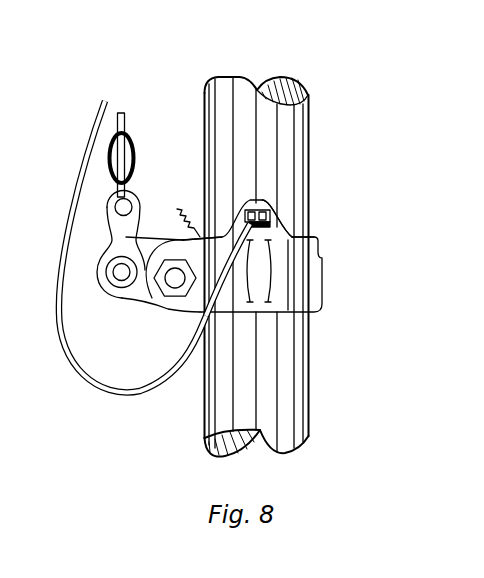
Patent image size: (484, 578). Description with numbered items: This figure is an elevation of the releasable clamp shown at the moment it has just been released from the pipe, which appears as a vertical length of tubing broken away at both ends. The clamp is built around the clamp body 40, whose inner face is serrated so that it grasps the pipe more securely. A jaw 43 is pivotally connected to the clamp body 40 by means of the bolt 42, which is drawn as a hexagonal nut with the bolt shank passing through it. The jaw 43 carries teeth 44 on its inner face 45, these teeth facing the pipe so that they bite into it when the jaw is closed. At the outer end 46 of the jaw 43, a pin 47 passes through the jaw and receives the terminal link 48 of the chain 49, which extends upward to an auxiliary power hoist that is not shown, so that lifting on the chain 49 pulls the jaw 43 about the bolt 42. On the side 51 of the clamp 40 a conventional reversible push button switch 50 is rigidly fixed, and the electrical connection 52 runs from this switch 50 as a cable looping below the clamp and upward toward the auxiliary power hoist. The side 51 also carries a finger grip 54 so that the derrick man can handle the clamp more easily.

The clamp body 40 is at (303, 273).
The bolt 42 is at (185, 297).
The jaw 43 is at (155, 243).
The teeth 44 is at (180, 208).
The inner face 45 is at (188, 229).
The outer end 46 is at (136, 288).
The pin 47 is at (113, 293).
The terminal link 48 is at (121, 244).
The chain 49 is at (134, 160).
The reversible push button switch 50 is at (272, 216).
The side 51 is at (304, 237).
The electrical connection 52 is at (84, 181).
The finger grip 54 is at (260, 268).